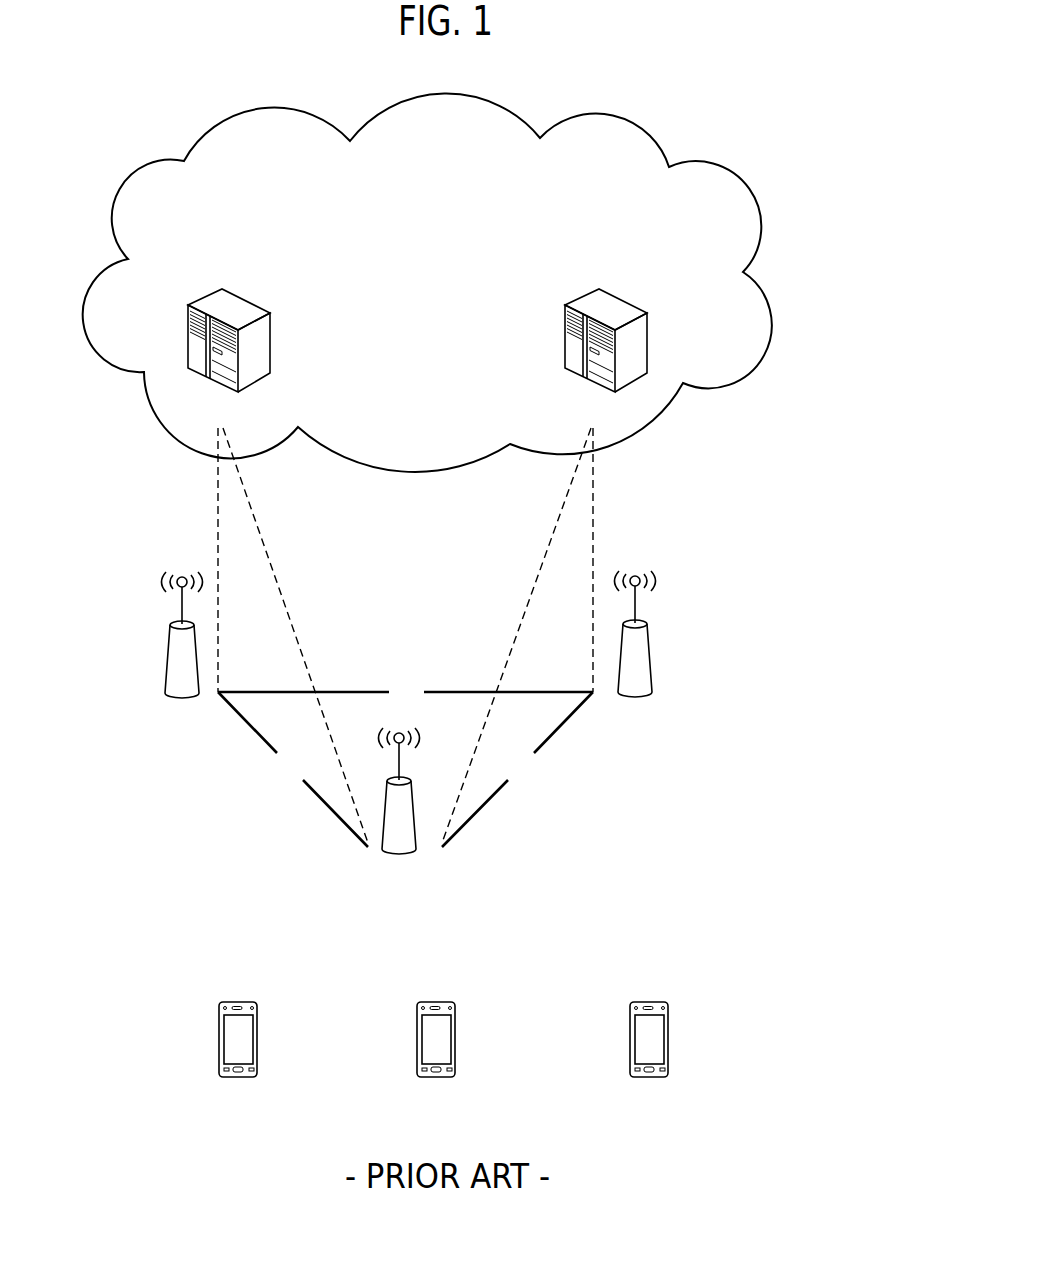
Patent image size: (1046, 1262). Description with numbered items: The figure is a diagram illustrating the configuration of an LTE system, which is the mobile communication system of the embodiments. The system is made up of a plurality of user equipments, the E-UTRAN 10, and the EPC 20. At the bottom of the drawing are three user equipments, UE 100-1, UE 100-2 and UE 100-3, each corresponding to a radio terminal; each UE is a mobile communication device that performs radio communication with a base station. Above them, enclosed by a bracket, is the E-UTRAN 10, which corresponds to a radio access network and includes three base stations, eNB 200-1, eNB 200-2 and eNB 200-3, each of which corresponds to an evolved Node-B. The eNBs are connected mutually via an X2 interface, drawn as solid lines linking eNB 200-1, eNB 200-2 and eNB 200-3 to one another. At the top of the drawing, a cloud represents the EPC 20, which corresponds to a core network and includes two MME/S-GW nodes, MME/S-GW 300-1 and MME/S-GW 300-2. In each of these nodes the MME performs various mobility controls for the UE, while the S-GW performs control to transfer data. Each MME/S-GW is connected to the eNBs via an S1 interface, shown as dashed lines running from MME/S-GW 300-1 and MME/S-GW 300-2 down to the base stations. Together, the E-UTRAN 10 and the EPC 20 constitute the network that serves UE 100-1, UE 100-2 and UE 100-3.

The E-UTRAN 10 is at (460, 663).
The EPC 20 is at (647, 133).
The UE 100-1 is at (275, 973).
The UE 100-2 is at (450, 1002).
The UE 100-3 is at (663, 1002).
The eNB 200-1 is at (168, 658).
The eNB 200-2 is at (418, 826).
The eNB 200-3 is at (647, 640).
The MME/S-GW 300-1 is at (248, 305).
The MME/S-GW 300-2 is at (620, 305).